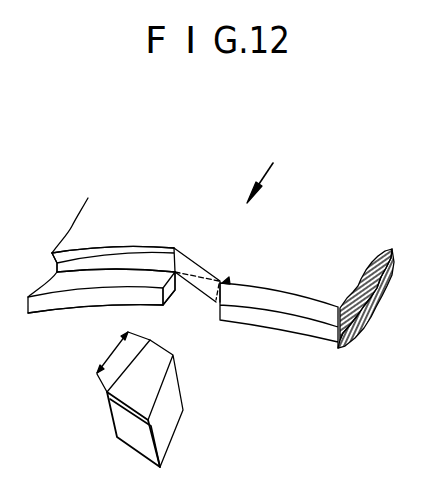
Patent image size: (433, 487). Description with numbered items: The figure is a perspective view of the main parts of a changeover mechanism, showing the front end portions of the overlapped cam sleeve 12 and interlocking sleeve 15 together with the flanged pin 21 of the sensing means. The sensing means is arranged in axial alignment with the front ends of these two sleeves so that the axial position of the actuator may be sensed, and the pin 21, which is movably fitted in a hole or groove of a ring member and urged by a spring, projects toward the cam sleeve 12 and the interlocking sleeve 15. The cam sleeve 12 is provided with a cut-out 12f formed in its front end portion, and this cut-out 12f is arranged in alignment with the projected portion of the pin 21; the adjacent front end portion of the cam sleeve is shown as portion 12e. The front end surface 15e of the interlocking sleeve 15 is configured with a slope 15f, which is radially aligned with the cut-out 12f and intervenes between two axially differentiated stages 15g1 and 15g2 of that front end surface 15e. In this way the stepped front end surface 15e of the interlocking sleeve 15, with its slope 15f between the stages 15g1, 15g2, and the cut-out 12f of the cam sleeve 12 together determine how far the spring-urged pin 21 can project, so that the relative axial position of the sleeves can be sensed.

The cam sleeve 12 is at (47, 284).
The base plate left portion 12e is at (50, 309).
The cut-out 12f is at (193, 302).
The interlocking sleeve 15 is at (72, 224).
The front end surface 15e is at (55, 256).
The slope 15f is at (183, 263).
The axially differentiated stage 15g1 is at (155, 260).
The axially differentiated stage 15g2 is at (267, 302).
The flanged pin 21 is at (165, 413).